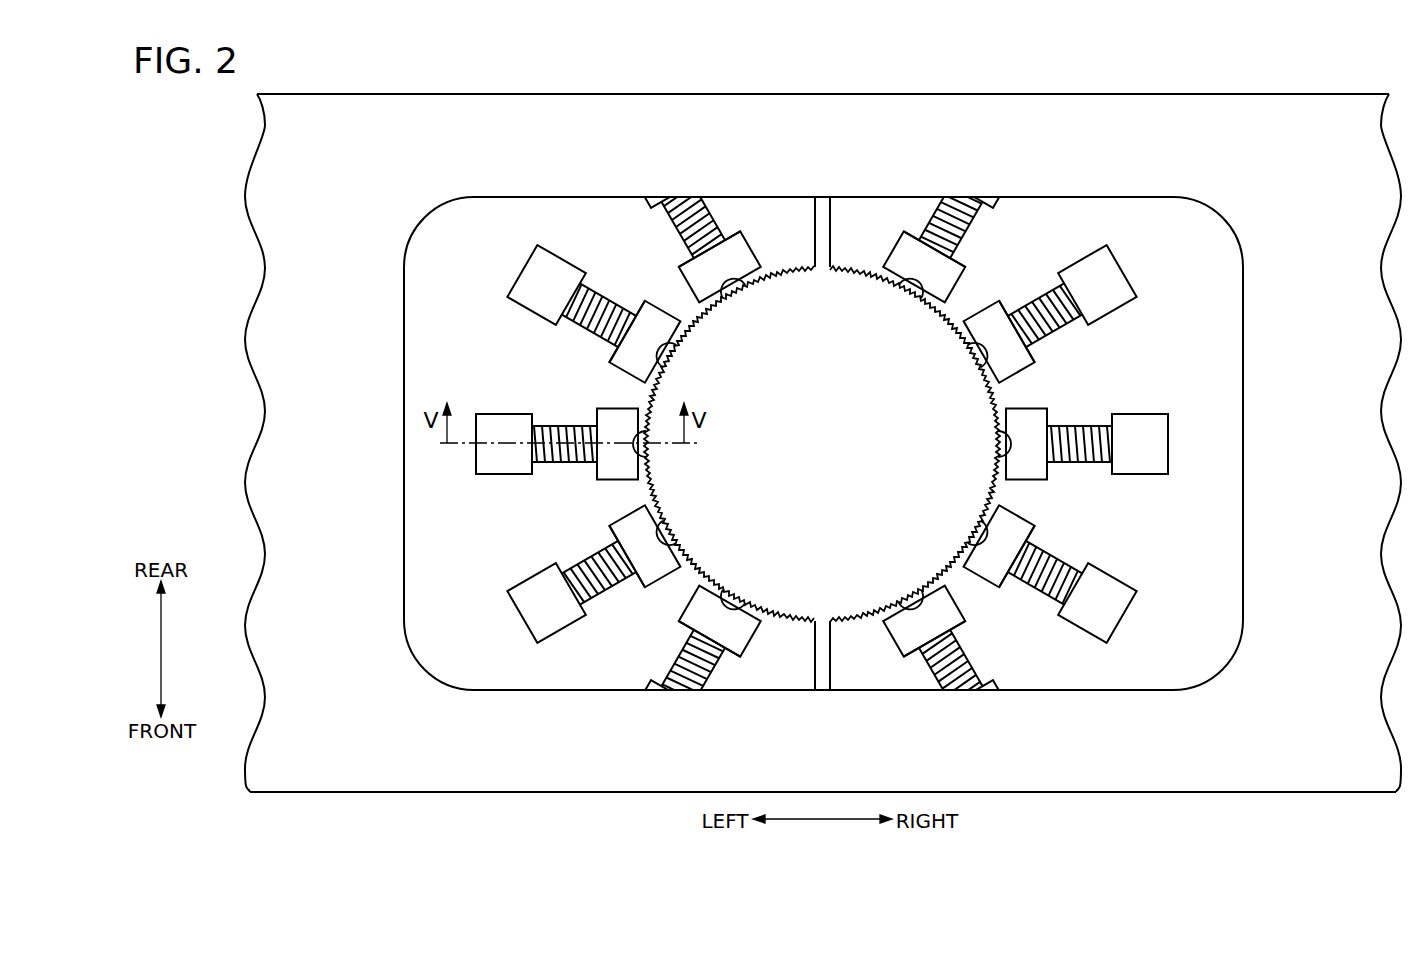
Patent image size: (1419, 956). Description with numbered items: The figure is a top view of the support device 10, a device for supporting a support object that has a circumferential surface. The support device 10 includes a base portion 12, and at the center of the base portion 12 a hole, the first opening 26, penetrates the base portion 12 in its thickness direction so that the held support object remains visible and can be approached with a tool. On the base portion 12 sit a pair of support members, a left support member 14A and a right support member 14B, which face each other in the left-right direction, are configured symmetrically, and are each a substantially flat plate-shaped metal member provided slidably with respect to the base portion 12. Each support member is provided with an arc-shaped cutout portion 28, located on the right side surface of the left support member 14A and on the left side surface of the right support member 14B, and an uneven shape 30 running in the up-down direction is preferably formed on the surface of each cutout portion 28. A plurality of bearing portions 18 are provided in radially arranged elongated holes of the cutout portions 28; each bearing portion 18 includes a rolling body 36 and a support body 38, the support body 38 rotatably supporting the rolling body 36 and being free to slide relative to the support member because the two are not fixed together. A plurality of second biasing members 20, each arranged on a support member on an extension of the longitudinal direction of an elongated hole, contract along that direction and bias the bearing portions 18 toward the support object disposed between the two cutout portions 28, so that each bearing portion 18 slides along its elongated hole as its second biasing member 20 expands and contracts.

The support device 10 is at (1331, 80).
The base portion 12 is at (528, 117).
The left support member 14A is at (430, 348).
The right support member 14B is at (1208, 323).
The bearing portion 18 is at (722, 268).
The second biasing member 20 is at (660, 205).
The first opening 26 is at (797, 208).
The cutout portion 28 is at (787, 605).
The uneven shape 30 is at (787, 268).
The rolling body 36 is at (740, 284).
The support body 38 is at (690, 272).